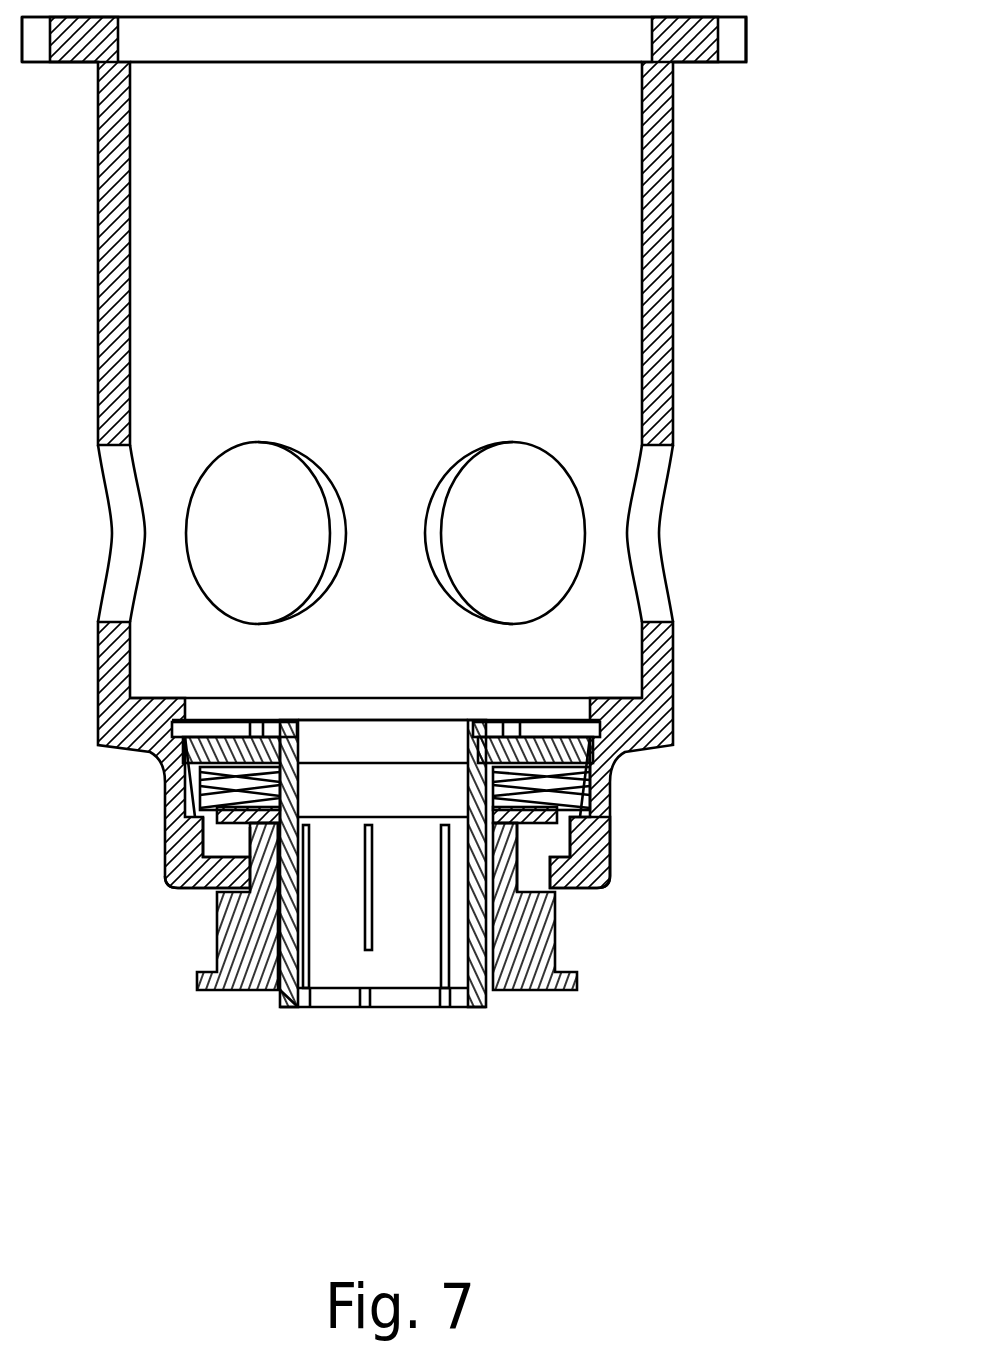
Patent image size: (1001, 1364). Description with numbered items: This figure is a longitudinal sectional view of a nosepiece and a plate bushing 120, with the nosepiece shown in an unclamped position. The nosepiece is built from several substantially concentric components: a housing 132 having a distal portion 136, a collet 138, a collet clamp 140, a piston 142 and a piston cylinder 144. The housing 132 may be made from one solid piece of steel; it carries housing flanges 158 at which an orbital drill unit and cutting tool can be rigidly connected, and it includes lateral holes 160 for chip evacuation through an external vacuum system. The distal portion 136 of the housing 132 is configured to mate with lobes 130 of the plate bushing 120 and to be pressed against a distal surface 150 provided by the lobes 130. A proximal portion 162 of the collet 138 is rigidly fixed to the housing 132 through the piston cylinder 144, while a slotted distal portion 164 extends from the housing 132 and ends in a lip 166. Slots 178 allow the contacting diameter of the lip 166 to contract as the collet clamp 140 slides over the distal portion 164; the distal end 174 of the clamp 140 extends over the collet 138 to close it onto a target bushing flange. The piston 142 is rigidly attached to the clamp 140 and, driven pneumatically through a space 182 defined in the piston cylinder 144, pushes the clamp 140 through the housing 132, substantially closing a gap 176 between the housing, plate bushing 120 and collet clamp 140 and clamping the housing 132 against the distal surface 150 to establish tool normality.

The plate bushing 120 is at (555, 950).
The lobes 130 is at (233, 843).
The housing 132 is at (672, 655).
The distal portion 136 is at (610, 884).
The collet 138 is at (280, 1000).
The collet clamp 140 is at (492, 932).
The piston 142 is at (573, 810).
The piston cylinder 144 is at (205, 740).
The distal surface 150 is at (225, 890).
The housing flanges 158 is at (708, 62).
The lateral holes 160 is at (645, 527).
The proximal portion 162 is at (470, 750).
The slotted distal portion 164 is at (488, 1003).
The lip 166 is at (330, 1010).
The distal end 174 is at (283, 967).
The gap 176 is at (560, 838).
The slots 178 is at (372, 955).
The space 182 is at (655, 740).